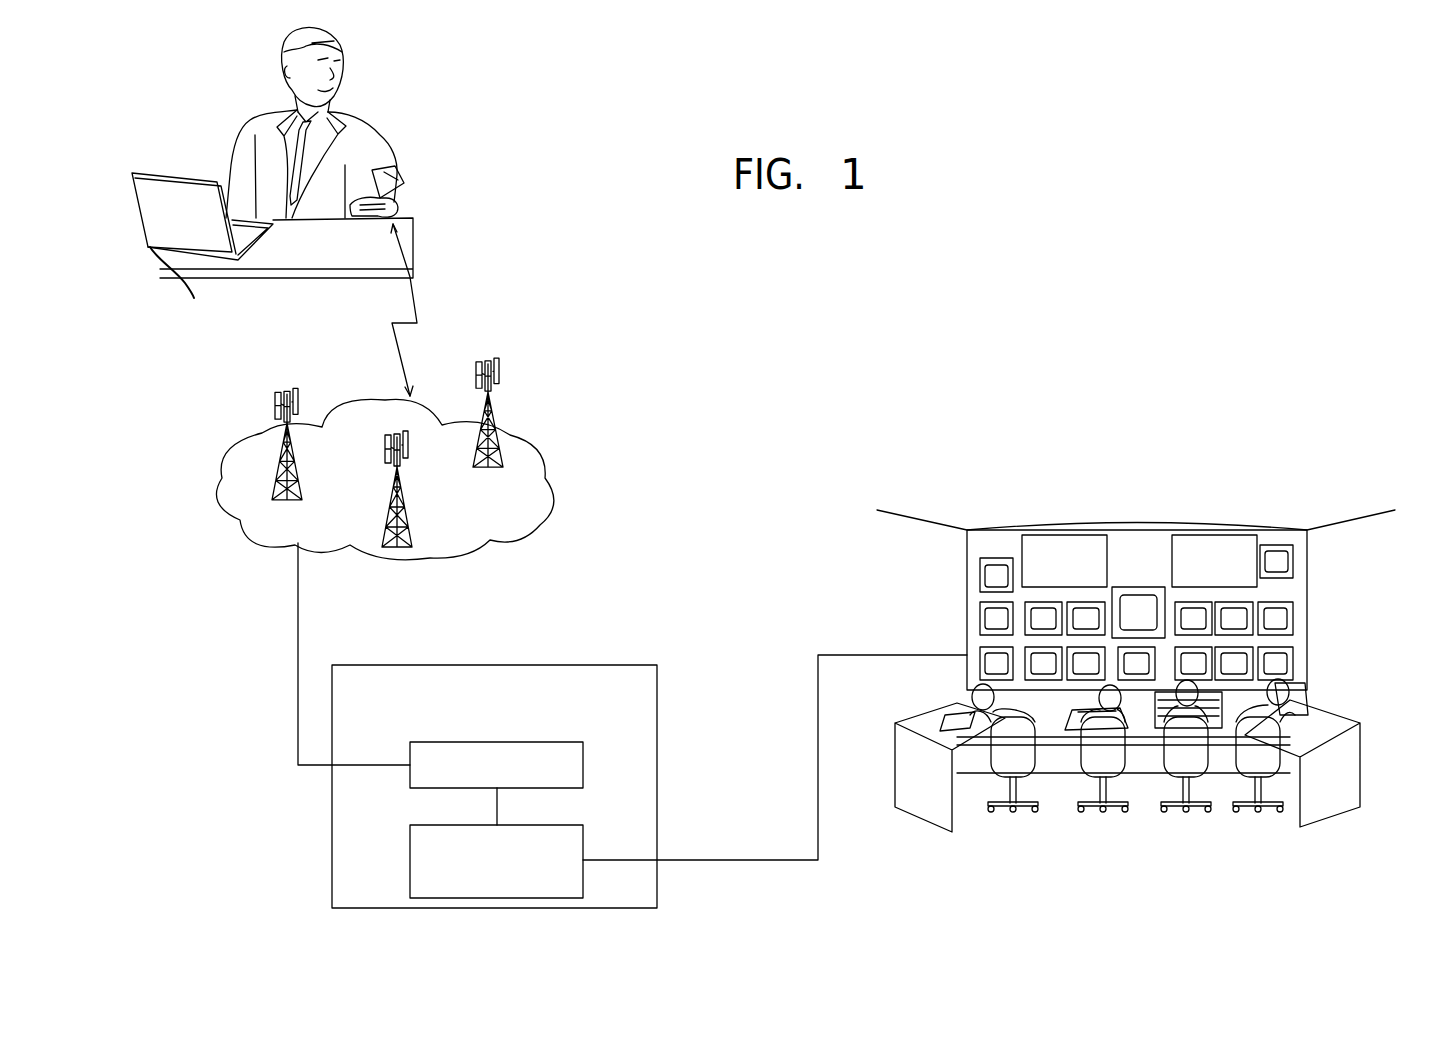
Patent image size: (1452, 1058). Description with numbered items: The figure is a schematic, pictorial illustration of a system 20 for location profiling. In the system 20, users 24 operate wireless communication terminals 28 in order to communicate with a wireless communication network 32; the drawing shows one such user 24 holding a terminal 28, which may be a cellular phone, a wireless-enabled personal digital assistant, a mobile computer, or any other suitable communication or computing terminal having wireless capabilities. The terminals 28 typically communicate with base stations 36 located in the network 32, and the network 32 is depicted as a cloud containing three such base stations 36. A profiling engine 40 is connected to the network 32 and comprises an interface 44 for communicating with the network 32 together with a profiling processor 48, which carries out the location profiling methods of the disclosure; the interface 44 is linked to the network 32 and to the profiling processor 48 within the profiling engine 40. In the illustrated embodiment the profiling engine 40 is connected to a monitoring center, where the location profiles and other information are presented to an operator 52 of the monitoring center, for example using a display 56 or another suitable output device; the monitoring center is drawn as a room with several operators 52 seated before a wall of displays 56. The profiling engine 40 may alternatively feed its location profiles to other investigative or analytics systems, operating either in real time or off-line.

The system 20 is at (877, 394).
The user 24 is at (258, 121).
The wireless communication terminal 28 is at (397, 170).
The wireless communication network 32 is at (546, 487).
The base station 36 is at (385, 505).
The profiling engine 40 is at (528, 665).
The interface 44 is at (410, 752).
The profiling processor 48 is at (410, 853).
The operator 52 is at (1307, 700).
The display 56 is at (1283, 618).